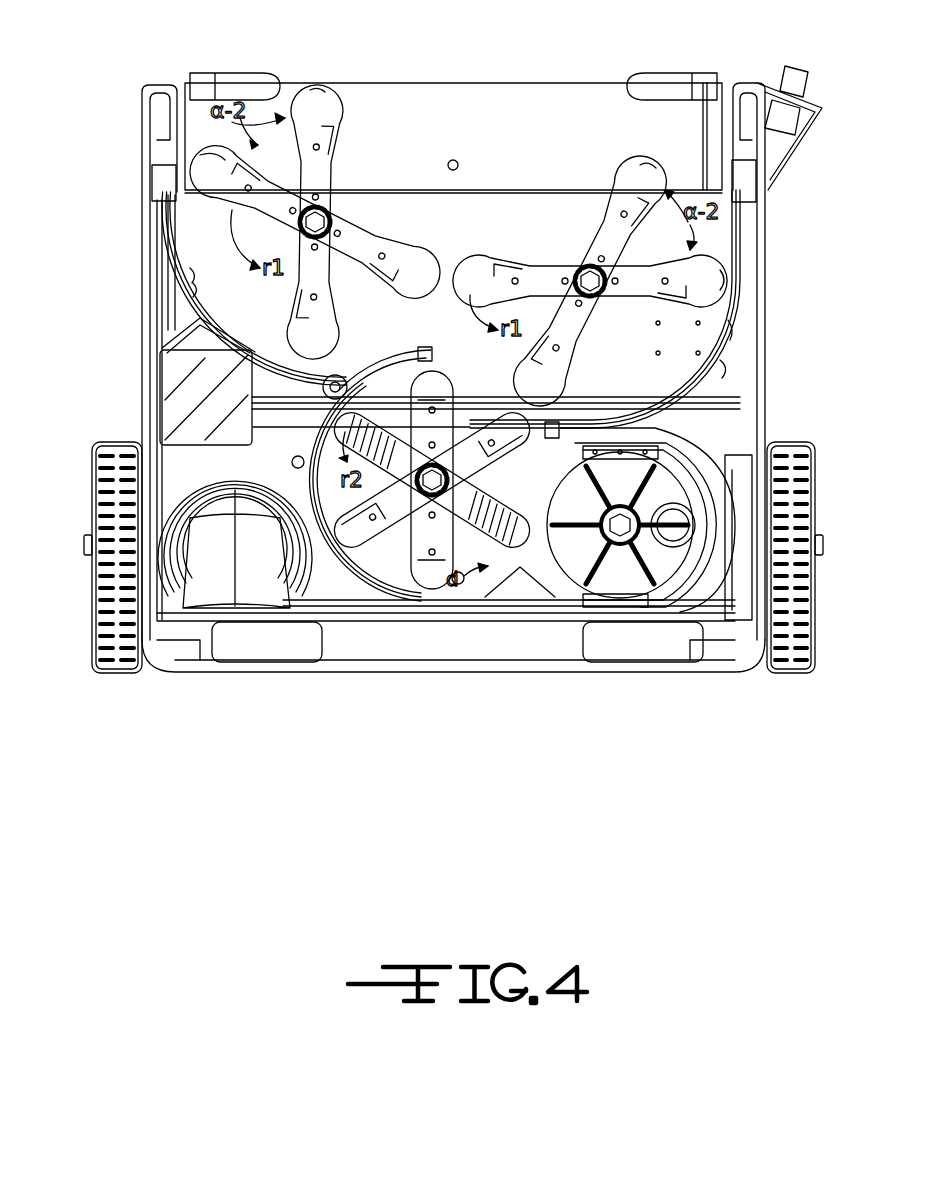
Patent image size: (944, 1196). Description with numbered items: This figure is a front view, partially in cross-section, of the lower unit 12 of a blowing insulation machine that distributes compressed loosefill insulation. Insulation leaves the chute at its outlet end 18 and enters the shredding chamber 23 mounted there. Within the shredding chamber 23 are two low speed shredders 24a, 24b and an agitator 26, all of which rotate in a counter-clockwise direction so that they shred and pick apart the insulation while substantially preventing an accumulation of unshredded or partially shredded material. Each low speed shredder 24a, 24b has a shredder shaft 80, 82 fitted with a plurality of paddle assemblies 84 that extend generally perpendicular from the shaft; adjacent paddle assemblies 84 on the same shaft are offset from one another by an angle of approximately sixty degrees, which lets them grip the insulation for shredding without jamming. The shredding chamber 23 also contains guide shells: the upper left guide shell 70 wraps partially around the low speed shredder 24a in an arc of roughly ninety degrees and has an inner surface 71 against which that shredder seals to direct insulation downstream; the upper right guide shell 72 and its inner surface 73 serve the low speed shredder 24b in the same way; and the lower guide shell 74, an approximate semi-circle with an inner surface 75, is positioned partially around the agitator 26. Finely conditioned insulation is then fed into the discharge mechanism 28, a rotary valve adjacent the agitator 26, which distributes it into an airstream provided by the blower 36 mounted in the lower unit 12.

The lower unit 12 is at (134, 146).
The outlet end 18 is at (556, 86).
The shredding chamber 23 is at (512, 205).
The low speed shredder 24a is at (215, 190).
The low speed shredder 24b is at (683, 255).
The agitator 26 is at (408, 560).
The discharge mechanism 28 is at (667, 575).
The blower 36 is at (158, 385).
The upper left guide shell 70 is at (193, 297).
The upper left guide shell inner surface 71 is at (190, 268).
The upper right guide shell 72 is at (733, 330).
The upper right guide shell inner surface 73 is at (725, 367).
The lower guide shell 74 is at (335, 548).
The lower guide shell inner surface 75 is at (347, 537).
The shredder shaft 80 is at (322, 214).
The shredder shaft 82 is at (588, 272).
The paddle assemblies 84 is at (200, 150).